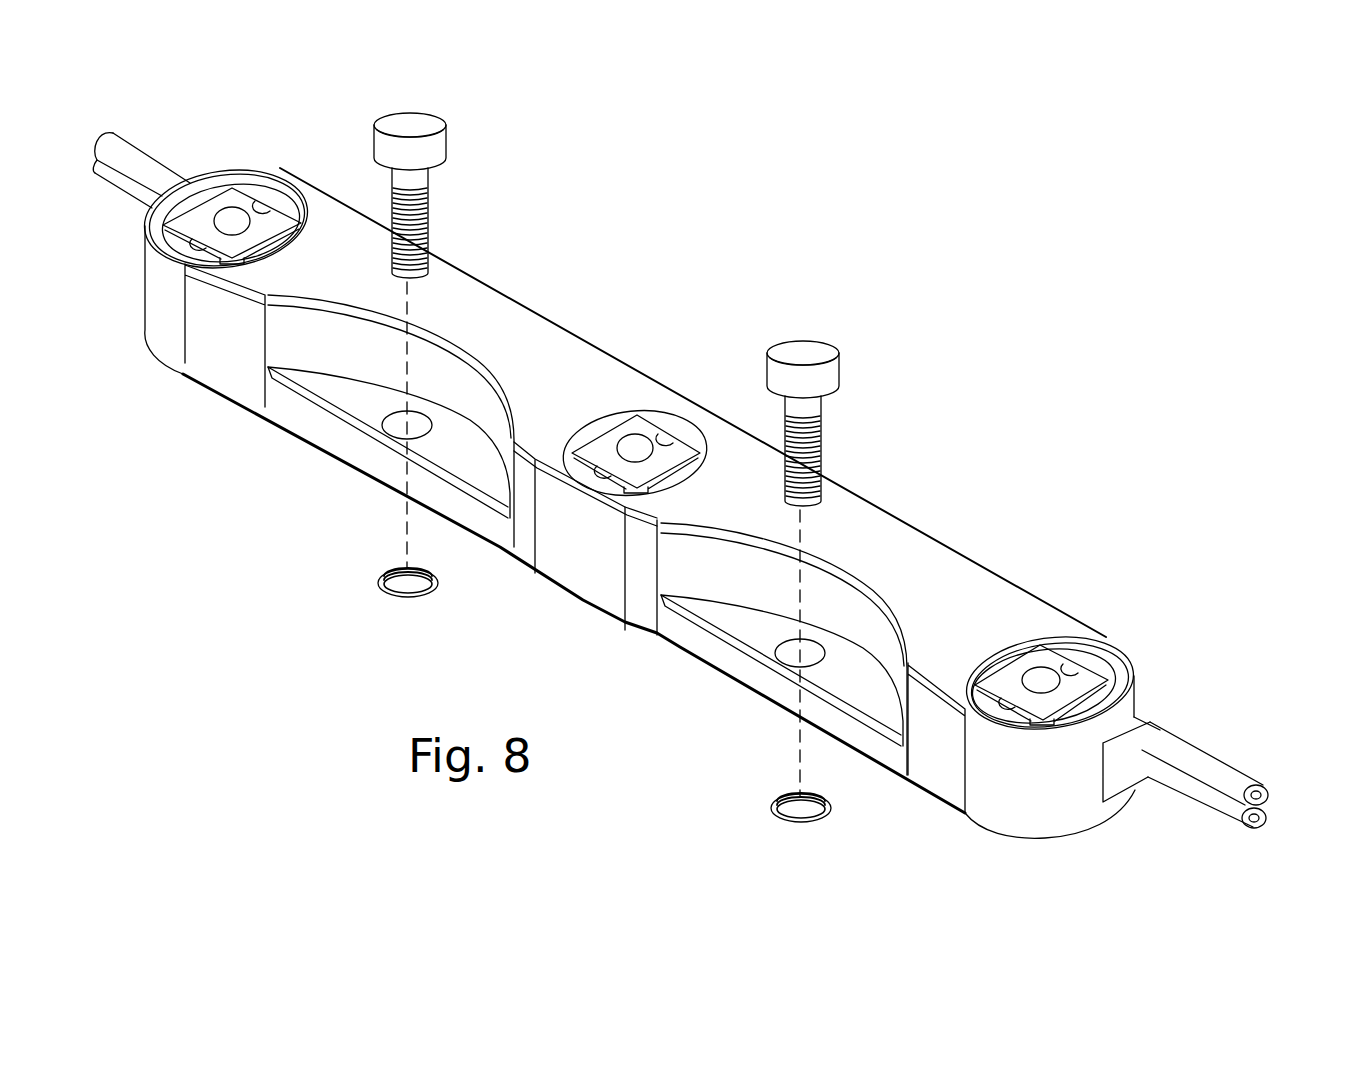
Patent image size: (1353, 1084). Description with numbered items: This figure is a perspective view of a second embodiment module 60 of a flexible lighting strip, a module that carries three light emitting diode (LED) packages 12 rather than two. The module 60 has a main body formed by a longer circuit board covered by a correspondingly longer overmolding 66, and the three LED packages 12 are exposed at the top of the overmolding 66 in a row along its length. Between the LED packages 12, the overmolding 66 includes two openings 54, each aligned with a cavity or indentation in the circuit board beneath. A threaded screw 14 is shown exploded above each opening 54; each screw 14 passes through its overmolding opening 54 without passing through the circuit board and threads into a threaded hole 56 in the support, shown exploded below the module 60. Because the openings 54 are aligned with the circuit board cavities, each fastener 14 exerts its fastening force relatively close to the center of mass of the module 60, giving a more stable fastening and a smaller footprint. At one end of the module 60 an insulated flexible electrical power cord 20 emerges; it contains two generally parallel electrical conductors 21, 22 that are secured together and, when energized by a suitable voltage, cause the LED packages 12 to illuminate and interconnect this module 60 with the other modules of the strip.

The light emitting diode (LED) package 12 is at (231, 212).
The threaded screw 14 is at (432, 146).
The insulated flexible electrical power cord 20 is at (1173, 742).
The electrical conductor 21 is at (1268, 795).
The electrical conductor 22 is at (1263, 828).
The overmolding opening 54 is at (398, 418).
The threaded hole 56 is at (400, 578).
The second embodiment module 60 is at (762, 290).
The overmolding 66 is at (541, 338).